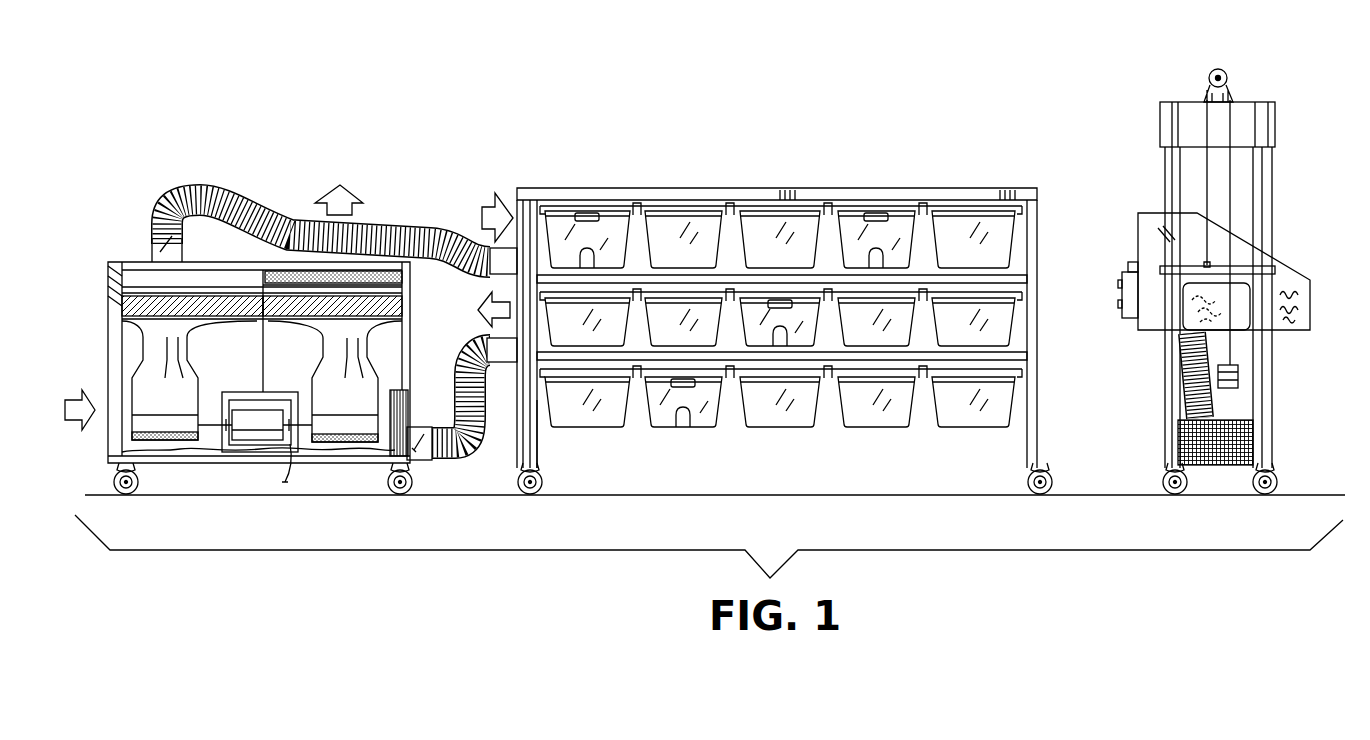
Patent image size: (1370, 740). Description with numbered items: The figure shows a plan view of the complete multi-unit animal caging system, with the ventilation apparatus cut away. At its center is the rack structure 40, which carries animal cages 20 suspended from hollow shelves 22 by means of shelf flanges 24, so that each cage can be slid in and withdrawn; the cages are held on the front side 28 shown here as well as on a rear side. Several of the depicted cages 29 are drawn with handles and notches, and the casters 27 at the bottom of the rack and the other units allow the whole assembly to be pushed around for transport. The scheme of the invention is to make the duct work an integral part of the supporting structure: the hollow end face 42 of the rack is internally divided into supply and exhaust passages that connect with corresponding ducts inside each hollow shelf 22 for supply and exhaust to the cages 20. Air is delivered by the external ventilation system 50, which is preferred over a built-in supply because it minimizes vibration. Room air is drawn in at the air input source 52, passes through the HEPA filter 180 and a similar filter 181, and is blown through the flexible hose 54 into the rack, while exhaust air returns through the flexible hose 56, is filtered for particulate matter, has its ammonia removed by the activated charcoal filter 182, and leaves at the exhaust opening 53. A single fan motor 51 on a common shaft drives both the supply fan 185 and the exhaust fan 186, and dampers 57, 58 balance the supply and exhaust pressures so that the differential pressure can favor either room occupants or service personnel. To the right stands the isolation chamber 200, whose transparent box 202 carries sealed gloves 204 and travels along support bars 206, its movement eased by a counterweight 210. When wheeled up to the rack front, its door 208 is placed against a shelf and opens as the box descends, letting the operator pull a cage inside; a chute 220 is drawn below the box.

The animal cage 20 is at (688, 233).
The hollow shelf 22 is at (945, 188).
The shelf flange 24 is at (635, 204).
The caster wheel 27 is at (145, 466).
The front side 28 is at (1037, 384).
The notched container 29 is at (895, 240).
The rack structure 40 is at (520, 187).
The end face 42 is at (517, 412).
The external ventilation system 50 is at (197, 468).
The fan motor 51 is at (264, 432).
The air input source 52 is at (110, 365).
The exhaust opening 53 is at (377, 261).
The flexible hose 54 is at (400, 228).
The flexible hose 56 is at (438, 462).
The damper 57 is at (162, 246).
The damper 58 is at (419, 462).
The HEPA filter 180 is at (130, 310).
The heating element 181 is at (392, 306).
The activated charcoal filter 182 is at (315, 272).
The supply fan 185 is at (122, 453).
The exhaust fan 186 is at (357, 392).
The isolation chamber 200 is at (1131, 237).
The transparent box 202 is at (1278, 256).
The sealed gloves 204 is at (1310, 304).
The support bar 206 is at (1164, 405).
The door 208 is at (1130, 292).
The counterweight 210 is at (1238, 368).
The chute 220 is at (1185, 384).